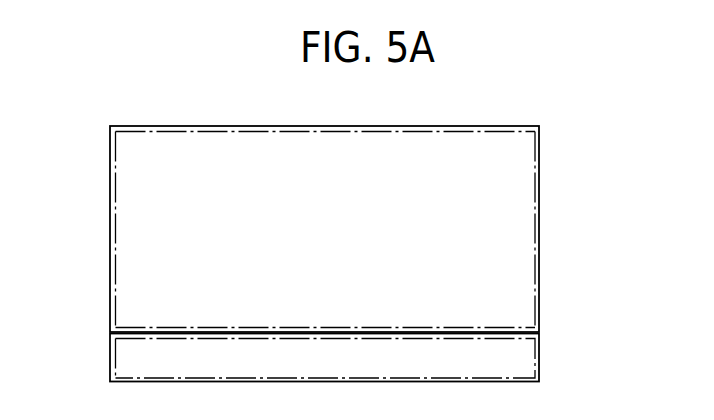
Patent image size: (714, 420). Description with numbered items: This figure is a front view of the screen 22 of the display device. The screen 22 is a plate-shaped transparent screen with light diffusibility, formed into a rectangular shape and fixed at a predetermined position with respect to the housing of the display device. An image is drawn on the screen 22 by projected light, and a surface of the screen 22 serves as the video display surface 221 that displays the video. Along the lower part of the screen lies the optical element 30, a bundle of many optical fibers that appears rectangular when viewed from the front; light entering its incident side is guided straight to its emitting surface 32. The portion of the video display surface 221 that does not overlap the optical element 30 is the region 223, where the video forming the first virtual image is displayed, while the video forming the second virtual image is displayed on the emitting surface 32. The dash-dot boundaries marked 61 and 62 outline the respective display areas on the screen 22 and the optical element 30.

The screen 22 is at (543, 152).
The video display surface 221 is at (503, 217).
The region 223 is at (536, 270).
The first adhesive member 61 is at (118, 228).
The second adhesive member 62 is at (118, 358).
The optical element 30 is at (544, 368).
The emitting surface 32 is at (522, 349).